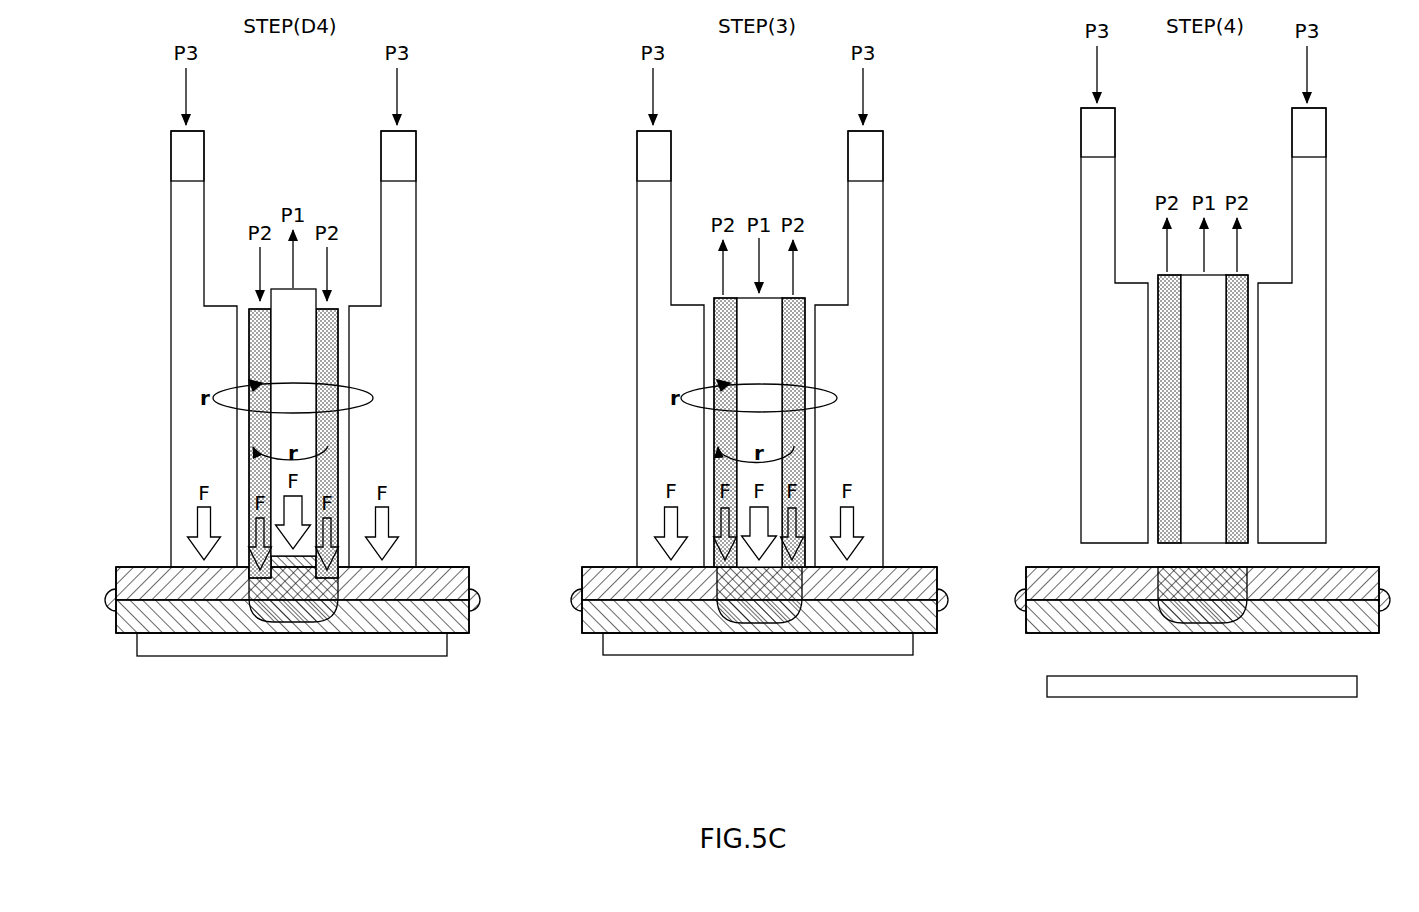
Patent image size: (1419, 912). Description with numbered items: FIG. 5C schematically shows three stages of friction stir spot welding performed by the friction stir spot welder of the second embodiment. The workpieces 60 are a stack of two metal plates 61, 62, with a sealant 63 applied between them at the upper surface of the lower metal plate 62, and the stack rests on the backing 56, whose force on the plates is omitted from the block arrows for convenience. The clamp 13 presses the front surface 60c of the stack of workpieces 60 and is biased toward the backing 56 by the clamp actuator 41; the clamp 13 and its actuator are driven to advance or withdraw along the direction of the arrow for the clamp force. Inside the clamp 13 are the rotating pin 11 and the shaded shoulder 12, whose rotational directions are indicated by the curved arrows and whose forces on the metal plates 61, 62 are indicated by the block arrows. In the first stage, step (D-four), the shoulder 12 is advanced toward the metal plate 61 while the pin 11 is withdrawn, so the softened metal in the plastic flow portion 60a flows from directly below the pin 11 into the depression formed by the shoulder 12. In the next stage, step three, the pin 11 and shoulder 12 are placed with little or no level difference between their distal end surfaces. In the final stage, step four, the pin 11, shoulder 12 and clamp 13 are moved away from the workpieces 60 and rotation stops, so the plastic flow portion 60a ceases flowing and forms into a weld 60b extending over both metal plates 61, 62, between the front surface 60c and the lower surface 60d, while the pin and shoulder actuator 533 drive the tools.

The pin 11 is at (288, 425).
The shoulder 12 is at (258, 372).
The clamp 13 is at (182, 258).
The clamp actuator 41 is at (171, 147).
The clamp drive portion 533 is at (637, 142).
The backing 56 is at (182, 645).
The workpieces 60 is at (142, 562).
The plastic flow portion 60a is at (293, 612).
The weld 60b is at (1205, 605).
The front surface 60c is at (448, 567).
The lower surface of workpiece 60d is at (460, 633).
The metal plate 61 is at (130, 587).
The metal plate 62 is at (130, 622).
The sealant 63 is at (476, 610).